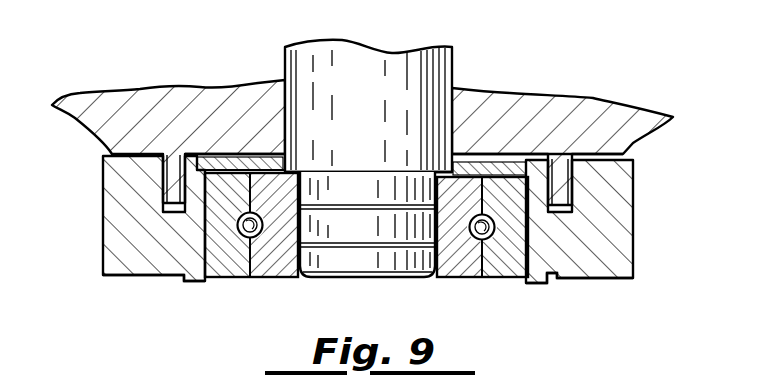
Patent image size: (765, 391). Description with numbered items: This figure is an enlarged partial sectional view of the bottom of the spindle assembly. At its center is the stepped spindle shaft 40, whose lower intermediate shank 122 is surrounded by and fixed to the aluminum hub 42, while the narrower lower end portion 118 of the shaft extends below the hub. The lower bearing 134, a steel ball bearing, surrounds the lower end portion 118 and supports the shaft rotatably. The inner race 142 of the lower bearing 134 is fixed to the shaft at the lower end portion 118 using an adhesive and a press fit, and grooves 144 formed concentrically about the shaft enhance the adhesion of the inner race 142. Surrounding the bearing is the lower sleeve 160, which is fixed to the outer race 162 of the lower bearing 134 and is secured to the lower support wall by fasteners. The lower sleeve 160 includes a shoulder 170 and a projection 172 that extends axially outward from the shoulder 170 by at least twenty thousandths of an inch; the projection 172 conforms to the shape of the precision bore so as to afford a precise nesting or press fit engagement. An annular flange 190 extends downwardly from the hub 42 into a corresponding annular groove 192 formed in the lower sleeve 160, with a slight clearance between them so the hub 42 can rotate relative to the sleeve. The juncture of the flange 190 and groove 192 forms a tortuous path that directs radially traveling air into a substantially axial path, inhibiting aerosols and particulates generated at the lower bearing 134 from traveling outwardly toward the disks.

The spindle shaft 40 is at (443, 66).
The hub 42 is at (177, 86).
The lower end portion 118 is at (356, 257).
The lower intermediate shank 122 is at (327, 60).
The lower bearing 134 is at (474, 240).
The inner race 142 is at (284, 263).
The grooves 144 is at (345, 206).
The lower sleeve 160 is at (617, 238).
The outer race 162 is at (501, 270).
The shoulder 170 is at (606, 280).
The projection 172 is at (195, 282).
The annular flange 190 is at (563, 184).
The annular groove 192 is at (162, 202).